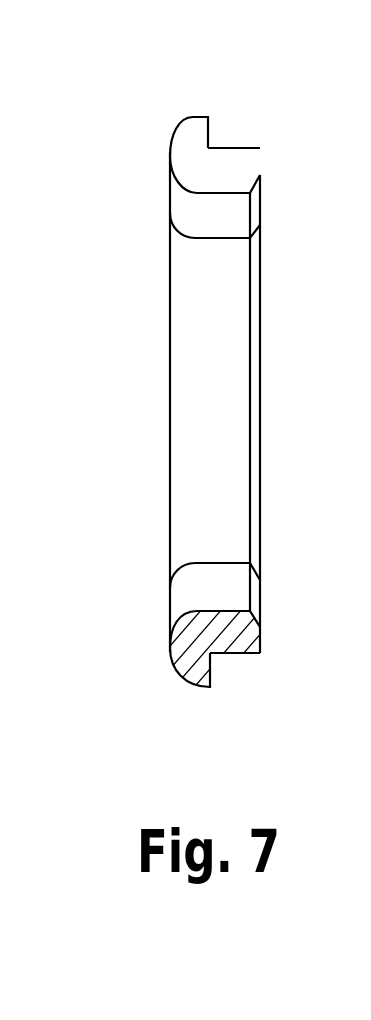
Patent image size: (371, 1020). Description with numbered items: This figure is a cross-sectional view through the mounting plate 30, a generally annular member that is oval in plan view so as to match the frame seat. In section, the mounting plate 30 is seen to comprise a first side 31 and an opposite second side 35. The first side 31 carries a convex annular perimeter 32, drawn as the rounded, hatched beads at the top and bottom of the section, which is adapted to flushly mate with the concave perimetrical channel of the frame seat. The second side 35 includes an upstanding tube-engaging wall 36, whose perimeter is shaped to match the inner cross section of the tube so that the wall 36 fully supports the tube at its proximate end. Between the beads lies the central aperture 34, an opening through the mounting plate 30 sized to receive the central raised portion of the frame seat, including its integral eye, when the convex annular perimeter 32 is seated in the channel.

The mounting plate 30 is at (170, 243).
The first side 31 is at (170, 567).
The convex annular perimeter 32 is at (173, 133).
The central aperture 34 is at (217, 415).
The second side 35 is at (260, 633).
The tube-engaging wall 36 is at (242, 148).